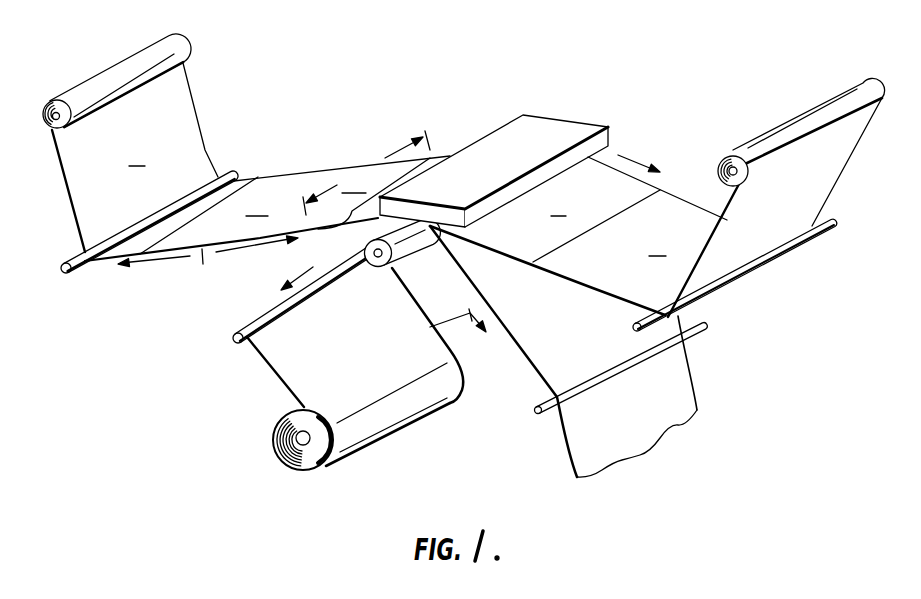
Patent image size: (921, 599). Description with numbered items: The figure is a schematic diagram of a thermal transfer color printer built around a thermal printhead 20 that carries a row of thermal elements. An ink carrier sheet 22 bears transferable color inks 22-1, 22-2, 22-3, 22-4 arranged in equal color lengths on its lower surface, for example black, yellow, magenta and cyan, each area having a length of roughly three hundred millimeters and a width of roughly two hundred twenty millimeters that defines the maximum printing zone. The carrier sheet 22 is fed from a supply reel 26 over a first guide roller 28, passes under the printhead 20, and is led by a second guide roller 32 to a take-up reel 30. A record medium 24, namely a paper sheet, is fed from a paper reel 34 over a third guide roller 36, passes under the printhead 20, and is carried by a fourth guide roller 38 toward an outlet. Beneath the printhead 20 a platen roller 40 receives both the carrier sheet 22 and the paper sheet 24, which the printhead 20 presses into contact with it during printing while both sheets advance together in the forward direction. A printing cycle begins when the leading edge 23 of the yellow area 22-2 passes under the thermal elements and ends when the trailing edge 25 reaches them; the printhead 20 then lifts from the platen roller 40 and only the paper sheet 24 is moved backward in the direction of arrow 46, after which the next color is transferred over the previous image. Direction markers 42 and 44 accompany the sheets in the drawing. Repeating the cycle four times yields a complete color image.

The thermal printhead 20 is at (552, 130).
The ink carrier sheet 22 is at (833, 166).
The black color ink area 22-1 is at (674, 212).
The yellow color ink area 22-2 is at (598, 167).
The magenta color ink area 22-3 is at (313, 147).
The cyan color ink area 22-4 is at (175, 91).
The leading edge 23 is at (603, 223).
The record medium 24 is at (668, 405).
The trailing edge 25 is at (371, 208).
The supply reel 26 is at (97, 82).
The first guide roller 28 is at (75, 272).
The take-up reel 30 is at (747, 171).
The second guide roller 32 is at (836, 230).
The paper reel 34 is at (288, 453).
The third guide roller 36 is at (250, 345).
The fourth guide roller 38 is at (535, 413).
The platen roller 40 is at (419, 244).
The direction arrow 42 is at (645, 151).
The direction arrow 44 is at (430, 327).
The arrow 46 is at (303, 268).